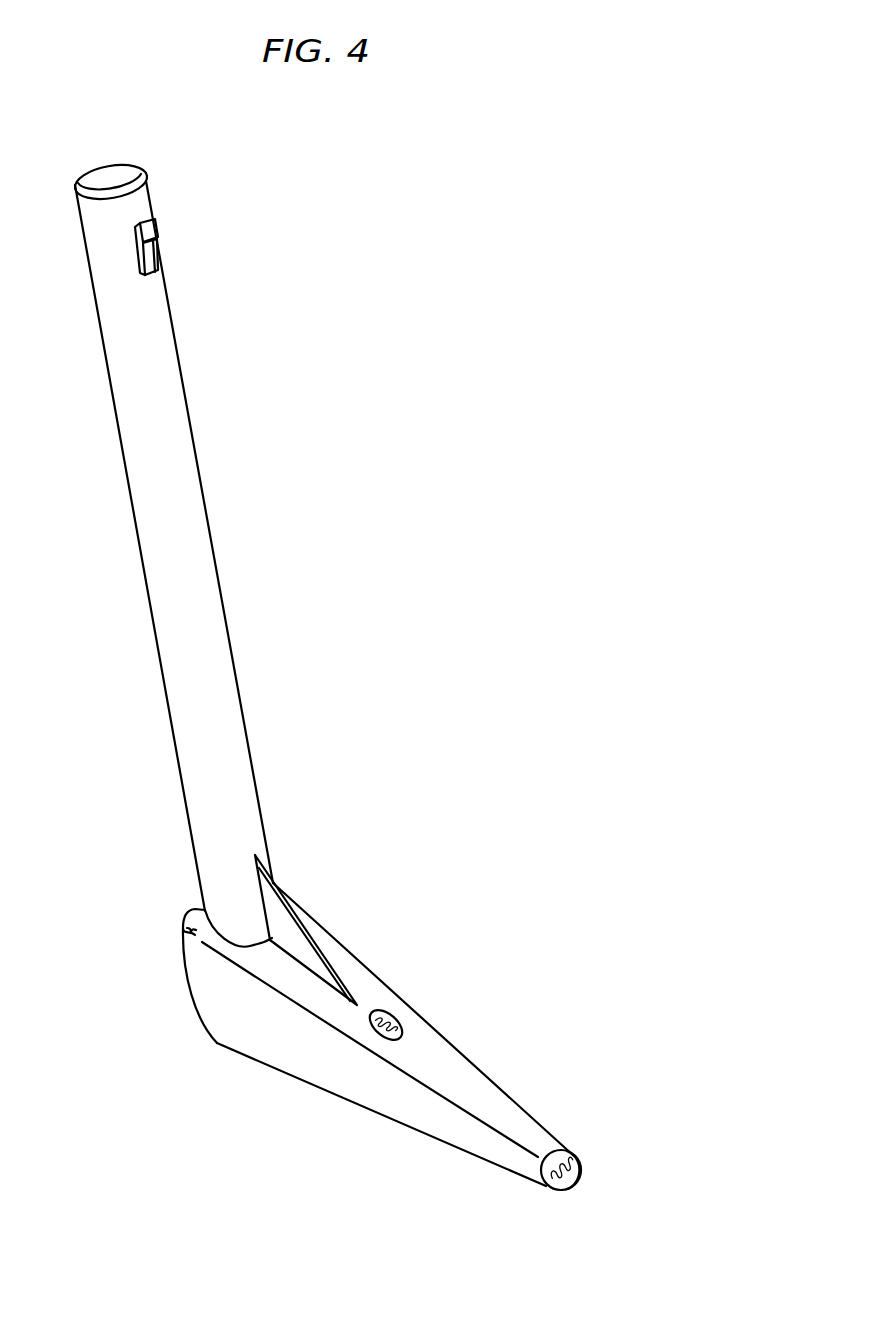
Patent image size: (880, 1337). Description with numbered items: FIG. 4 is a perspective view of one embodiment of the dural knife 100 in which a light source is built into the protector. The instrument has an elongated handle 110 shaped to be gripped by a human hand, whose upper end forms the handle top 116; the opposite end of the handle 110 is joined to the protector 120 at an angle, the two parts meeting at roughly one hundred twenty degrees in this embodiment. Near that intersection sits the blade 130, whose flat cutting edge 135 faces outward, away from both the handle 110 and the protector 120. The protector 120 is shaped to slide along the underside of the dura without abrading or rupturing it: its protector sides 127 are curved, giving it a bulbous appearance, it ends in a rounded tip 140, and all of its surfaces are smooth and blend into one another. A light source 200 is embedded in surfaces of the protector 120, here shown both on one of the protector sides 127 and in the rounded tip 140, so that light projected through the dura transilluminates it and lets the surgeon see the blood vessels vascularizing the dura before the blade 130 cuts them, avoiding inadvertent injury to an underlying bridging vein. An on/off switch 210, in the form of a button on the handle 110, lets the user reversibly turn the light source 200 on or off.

The dural knife 100 is at (518, 296).
The handle 110 is at (180, 485).
The handle top 116 is at (110, 183).
The protector 120 is at (302, 1052).
The protector sides 127 is at (503, 1085).
The blade 130 is at (281, 939).
The cutting edge 135 is at (302, 920).
The rounded tip 140 is at (578, 1157).
The light source 200 is at (403, 1013).
The on/off switch 210 is at (148, 255).